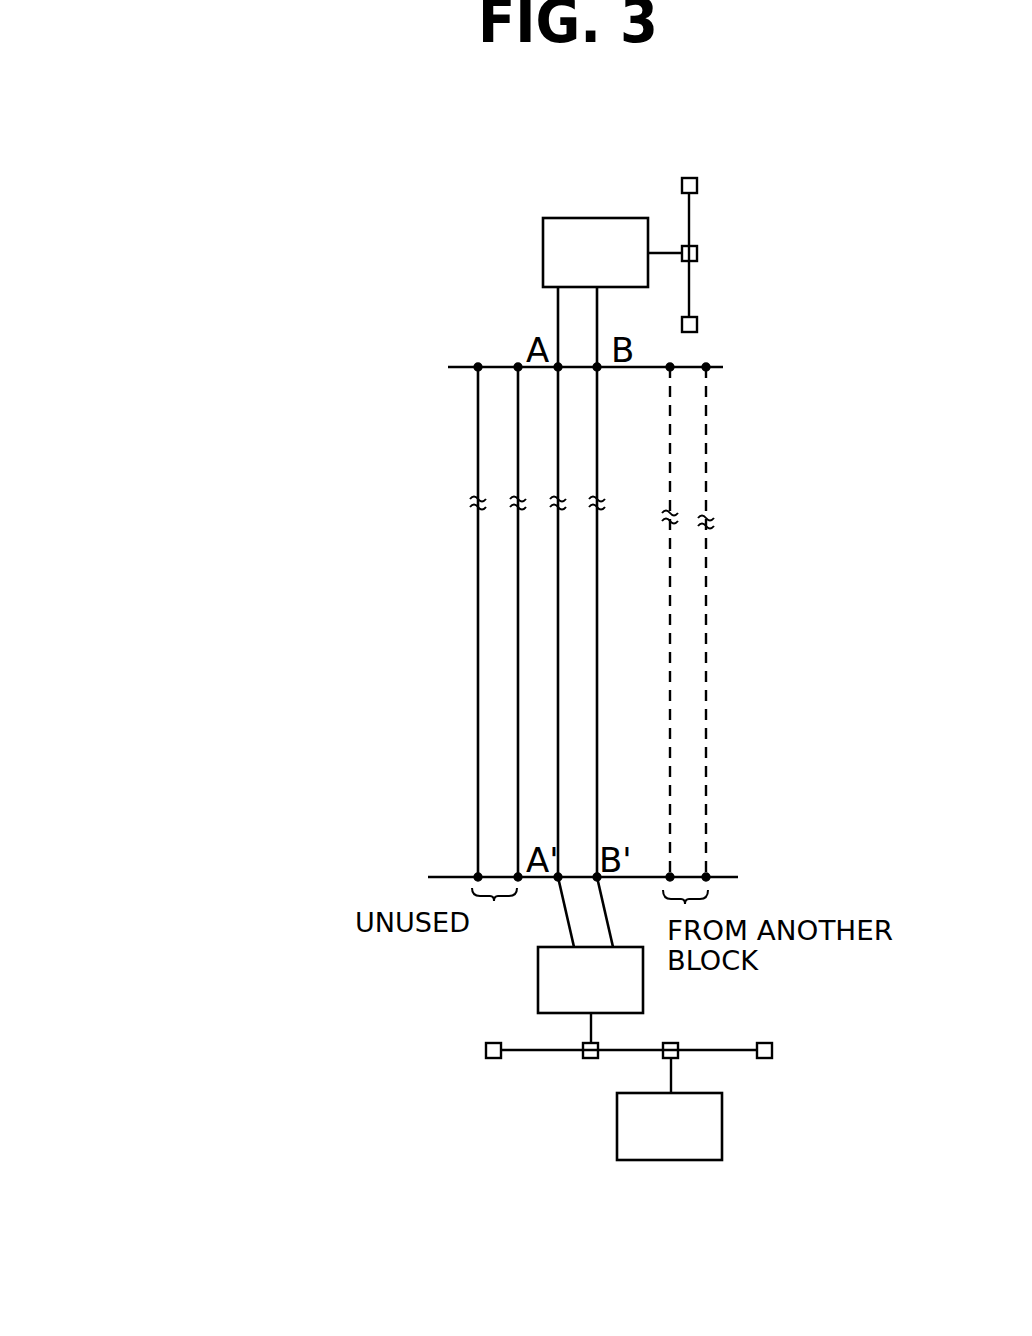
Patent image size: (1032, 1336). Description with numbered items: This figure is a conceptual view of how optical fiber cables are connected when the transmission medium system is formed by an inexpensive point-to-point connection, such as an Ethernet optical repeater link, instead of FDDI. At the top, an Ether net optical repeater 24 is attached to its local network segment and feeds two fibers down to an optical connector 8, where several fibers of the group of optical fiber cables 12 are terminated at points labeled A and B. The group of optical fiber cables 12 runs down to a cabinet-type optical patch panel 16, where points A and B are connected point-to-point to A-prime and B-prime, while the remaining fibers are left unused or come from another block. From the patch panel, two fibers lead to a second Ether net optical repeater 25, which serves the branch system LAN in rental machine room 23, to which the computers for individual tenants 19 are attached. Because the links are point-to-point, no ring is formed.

The Ether net optical repeater 24 is at (573, 243).
The Ether net optical repeater 25 is at (573, 977).
The optical connector 8 is at (478, 367).
The group of optical fiber cables 12 is at (478, 597).
The optical patch panel 16 is at (474, 875).
The branch system LAN in rental machine room 23 is at (735, 1055).
The computers for individual tenants 19 is at (722, 1133).